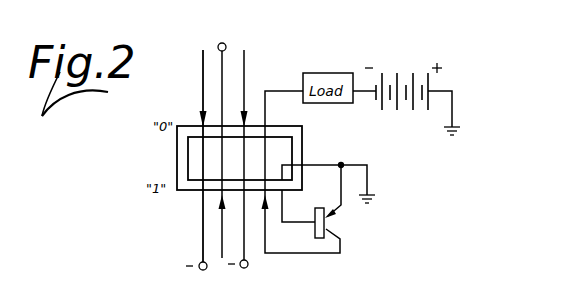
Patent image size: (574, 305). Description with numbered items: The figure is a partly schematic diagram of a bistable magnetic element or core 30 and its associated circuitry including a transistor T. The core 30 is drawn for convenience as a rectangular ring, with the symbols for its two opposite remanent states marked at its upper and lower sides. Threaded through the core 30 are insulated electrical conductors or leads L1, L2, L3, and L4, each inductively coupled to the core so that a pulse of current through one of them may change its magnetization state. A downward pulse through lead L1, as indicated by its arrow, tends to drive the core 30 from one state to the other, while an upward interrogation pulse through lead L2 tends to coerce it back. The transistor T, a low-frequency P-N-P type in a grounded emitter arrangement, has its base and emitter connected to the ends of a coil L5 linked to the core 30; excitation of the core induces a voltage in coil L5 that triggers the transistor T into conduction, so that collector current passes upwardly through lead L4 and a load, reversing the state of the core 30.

The lead L1 is at (203, 75).
The lead L2 is at (222, 258).
The lead L3 is at (244, 60).
The lead L4 is at (265, 117).
The coil L5 is at (283, 207).
The bistable magnetic element or core 30 is at (177, 153).
The transistor T is at (340, 223).